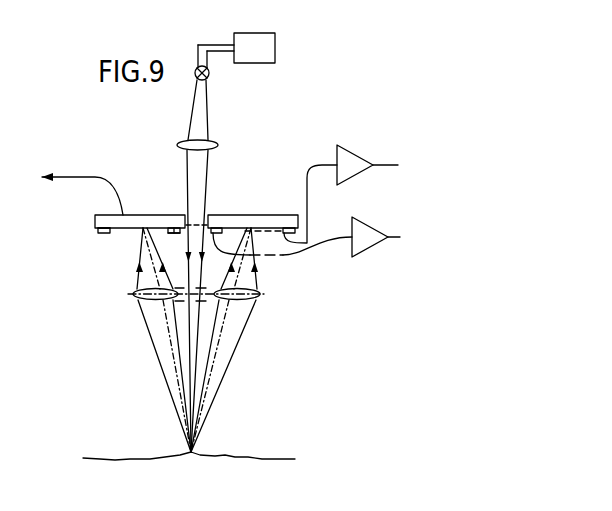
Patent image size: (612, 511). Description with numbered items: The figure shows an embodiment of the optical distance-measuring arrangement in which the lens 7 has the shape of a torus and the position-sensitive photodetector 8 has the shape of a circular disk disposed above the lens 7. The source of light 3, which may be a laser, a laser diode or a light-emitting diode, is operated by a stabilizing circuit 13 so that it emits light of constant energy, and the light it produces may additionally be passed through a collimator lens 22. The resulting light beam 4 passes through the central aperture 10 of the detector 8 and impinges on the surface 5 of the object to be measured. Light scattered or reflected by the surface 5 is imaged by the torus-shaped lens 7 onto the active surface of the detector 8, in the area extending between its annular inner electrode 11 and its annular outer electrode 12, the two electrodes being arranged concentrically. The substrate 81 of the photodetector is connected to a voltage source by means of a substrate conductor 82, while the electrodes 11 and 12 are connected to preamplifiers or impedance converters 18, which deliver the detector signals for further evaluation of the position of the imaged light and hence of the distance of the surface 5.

The stabilizing circuit 13 is at (264, 61).
The source of light 3 is at (208, 76).
The collimator lens 22 is at (214, 146).
The light beam 4 is at (202, 172).
The substrate conductor 82 is at (58, 177).
The substrate 81 is at (137, 215).
The annular inner electrode 11 is at (175, 227).
The central aperture 10 is at (195, 224).
The position-sensitive photodetector 8 is at (259, 215).
The preamplifiers or impedance converters 18 is at (360, 168).
The annular outer electrode 12 is at (104, 233).
The lens 7 is at (134, 296).
The surface 5 is at (247, 457).